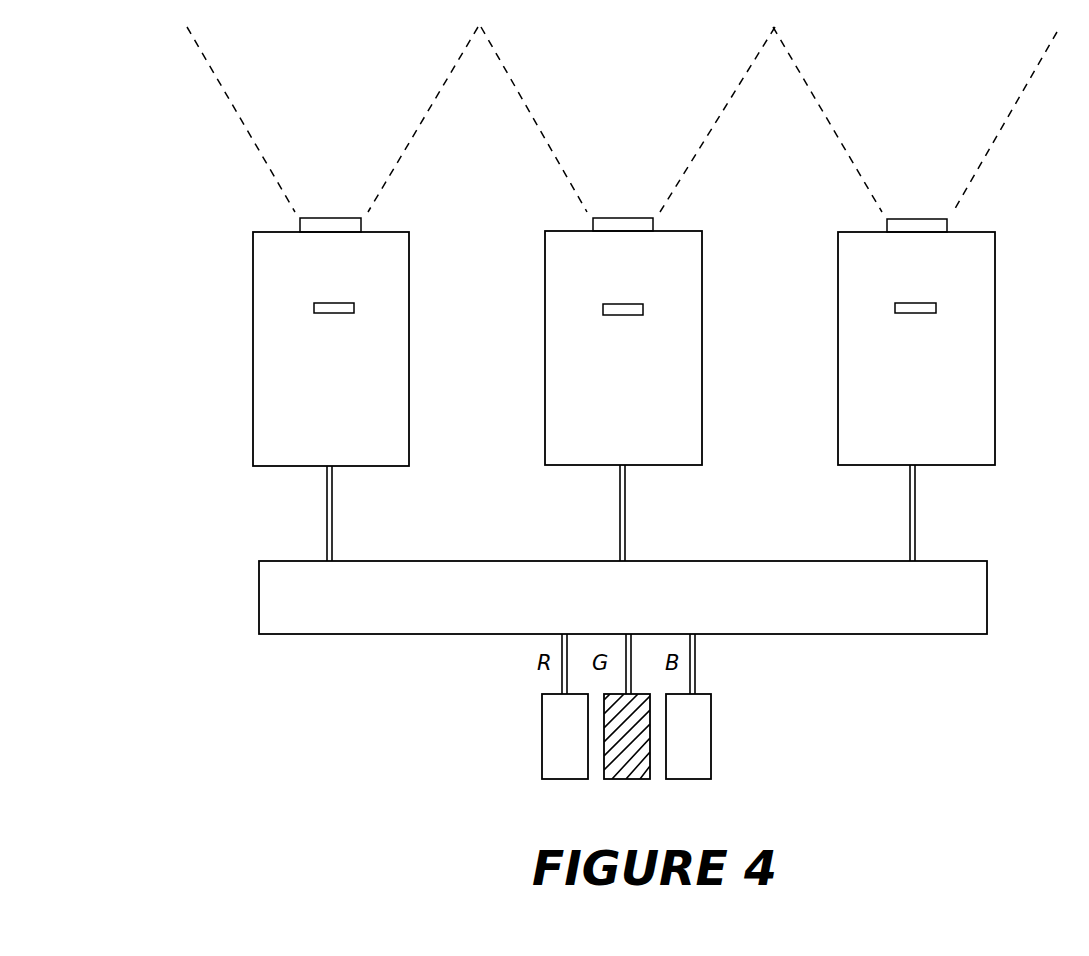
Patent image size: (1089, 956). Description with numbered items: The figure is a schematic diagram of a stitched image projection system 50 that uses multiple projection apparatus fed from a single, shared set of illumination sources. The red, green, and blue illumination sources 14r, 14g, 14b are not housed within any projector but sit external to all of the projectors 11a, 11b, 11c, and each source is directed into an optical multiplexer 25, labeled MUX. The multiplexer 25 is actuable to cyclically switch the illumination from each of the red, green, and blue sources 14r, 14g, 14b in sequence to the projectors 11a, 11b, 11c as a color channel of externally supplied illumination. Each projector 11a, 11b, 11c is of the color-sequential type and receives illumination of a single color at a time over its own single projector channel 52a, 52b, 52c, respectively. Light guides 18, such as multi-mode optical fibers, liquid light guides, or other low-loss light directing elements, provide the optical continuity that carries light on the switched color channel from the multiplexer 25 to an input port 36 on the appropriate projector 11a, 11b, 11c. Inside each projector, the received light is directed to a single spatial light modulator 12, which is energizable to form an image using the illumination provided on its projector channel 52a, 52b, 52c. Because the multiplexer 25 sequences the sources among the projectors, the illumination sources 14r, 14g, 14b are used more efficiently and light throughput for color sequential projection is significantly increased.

The stitched image projection system 50 is at (189, 211).
The projector 11a is at (312, 278).
The projector 11b is at (604, 273).
The projector 11c is at (896, 274).
The spatial light modulator 12 is at (337, 315).
The light guide 18 is at (327, 502).
The input port 36 is at (332, 468).
The optical multiplexer 25 is at (463, 610).
The projector channel 52a is at (330, 563).
The projector channel 52b is at (620, 562).
The projector channel 52c is at (910, 562).
The red illumination source 14r is at (540, 715).
The green illumination source 14g is at (650, 760).
The blue illumination source 14b is at (712, 723).